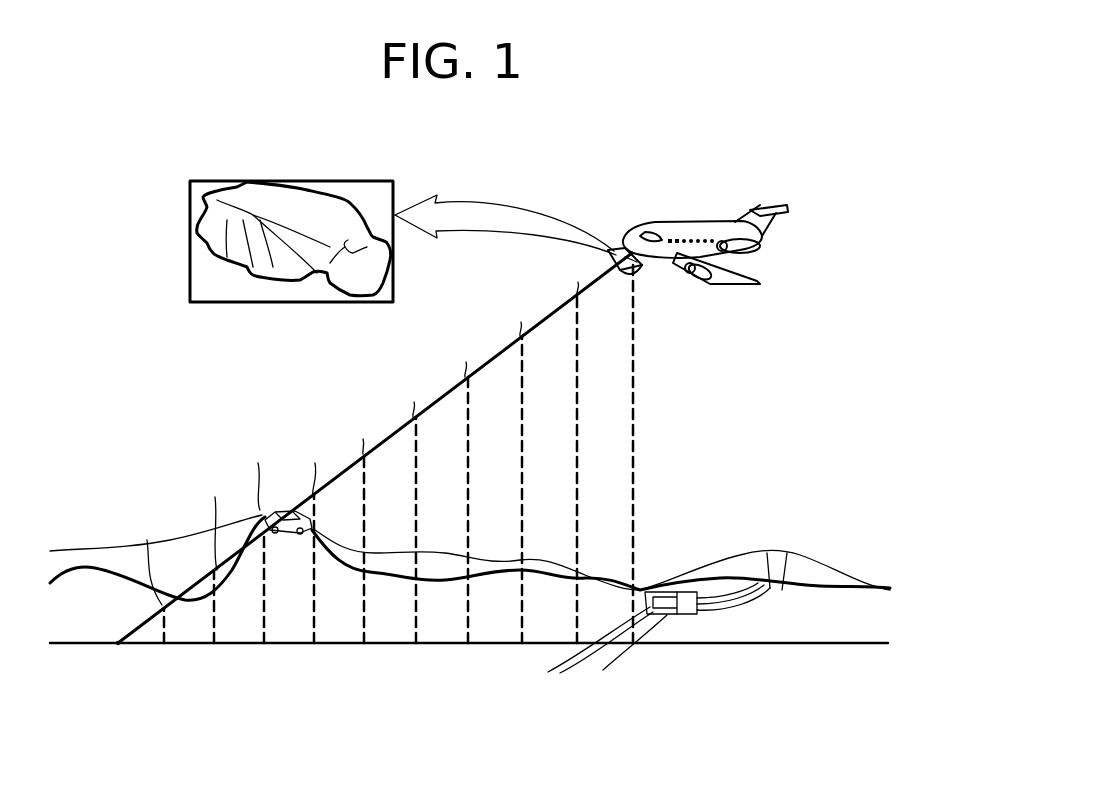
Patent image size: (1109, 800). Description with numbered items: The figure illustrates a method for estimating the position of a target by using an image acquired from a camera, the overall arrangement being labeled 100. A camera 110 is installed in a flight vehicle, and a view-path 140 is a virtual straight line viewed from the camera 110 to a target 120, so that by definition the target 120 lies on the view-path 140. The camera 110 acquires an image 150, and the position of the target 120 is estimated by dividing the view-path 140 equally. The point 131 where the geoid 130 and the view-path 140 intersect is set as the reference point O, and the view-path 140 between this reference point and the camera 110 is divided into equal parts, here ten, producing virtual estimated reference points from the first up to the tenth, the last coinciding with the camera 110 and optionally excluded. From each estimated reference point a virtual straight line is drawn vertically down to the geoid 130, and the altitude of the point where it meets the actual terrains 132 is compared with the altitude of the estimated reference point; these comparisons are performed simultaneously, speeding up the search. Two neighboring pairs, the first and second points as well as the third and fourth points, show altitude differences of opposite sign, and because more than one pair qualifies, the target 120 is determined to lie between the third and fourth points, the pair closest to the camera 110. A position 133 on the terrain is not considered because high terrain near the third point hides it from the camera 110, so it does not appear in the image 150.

The terrain scanning system 100 is at (94, 155).
The camera 110 is at (643, 272).
The target 120 is at (285, 510).
The geoid 130 is at (658, 646).
The point 131 is at (122, 647).
The actual terrains 132 is at (790, 555).
The position 133 is at (177, 593).
The view-path 140 is at (546, 327).
The image 150 is at (212, 298).